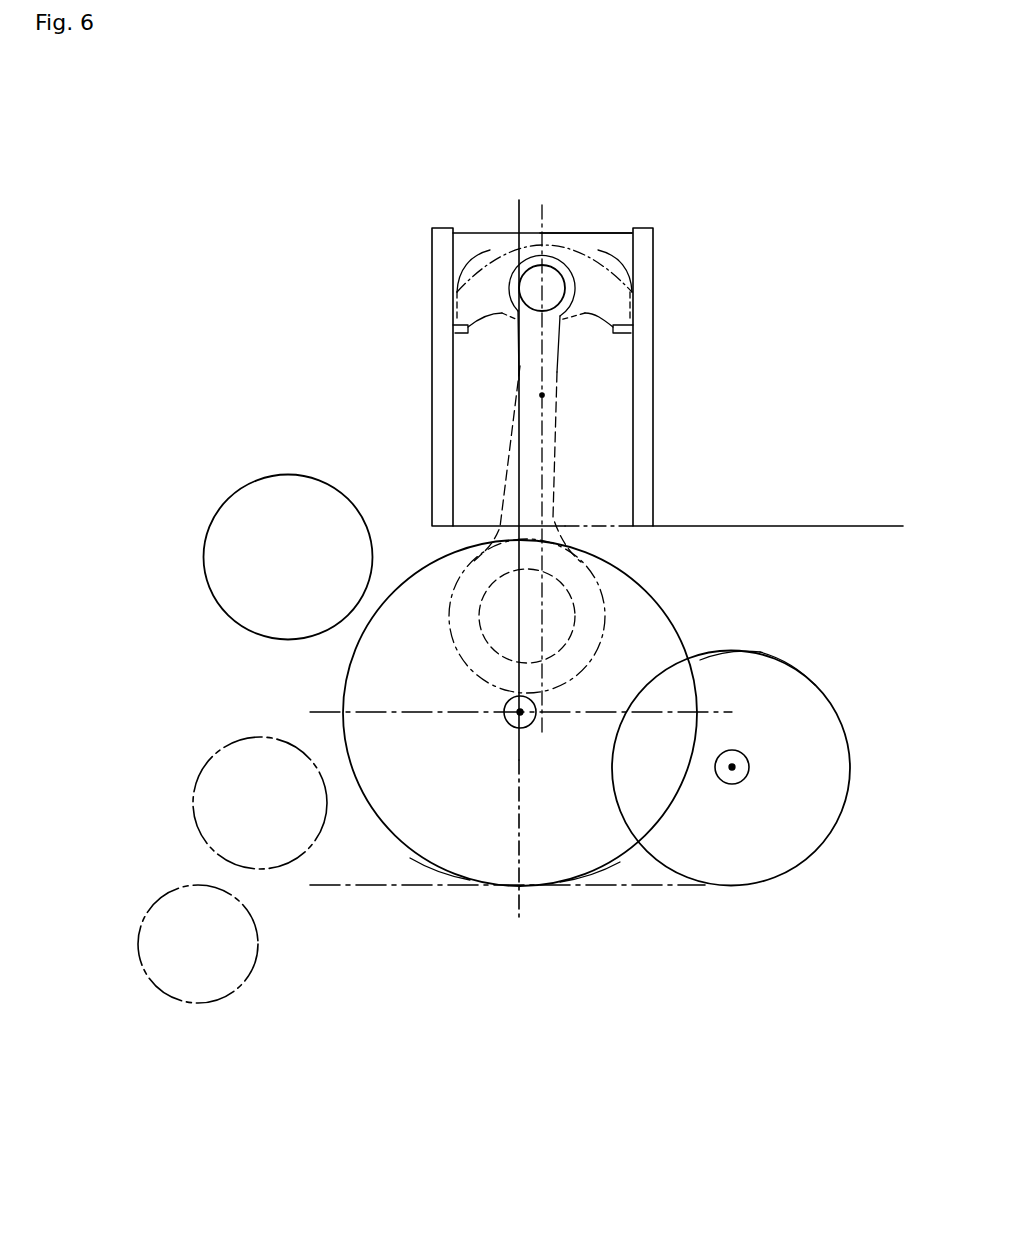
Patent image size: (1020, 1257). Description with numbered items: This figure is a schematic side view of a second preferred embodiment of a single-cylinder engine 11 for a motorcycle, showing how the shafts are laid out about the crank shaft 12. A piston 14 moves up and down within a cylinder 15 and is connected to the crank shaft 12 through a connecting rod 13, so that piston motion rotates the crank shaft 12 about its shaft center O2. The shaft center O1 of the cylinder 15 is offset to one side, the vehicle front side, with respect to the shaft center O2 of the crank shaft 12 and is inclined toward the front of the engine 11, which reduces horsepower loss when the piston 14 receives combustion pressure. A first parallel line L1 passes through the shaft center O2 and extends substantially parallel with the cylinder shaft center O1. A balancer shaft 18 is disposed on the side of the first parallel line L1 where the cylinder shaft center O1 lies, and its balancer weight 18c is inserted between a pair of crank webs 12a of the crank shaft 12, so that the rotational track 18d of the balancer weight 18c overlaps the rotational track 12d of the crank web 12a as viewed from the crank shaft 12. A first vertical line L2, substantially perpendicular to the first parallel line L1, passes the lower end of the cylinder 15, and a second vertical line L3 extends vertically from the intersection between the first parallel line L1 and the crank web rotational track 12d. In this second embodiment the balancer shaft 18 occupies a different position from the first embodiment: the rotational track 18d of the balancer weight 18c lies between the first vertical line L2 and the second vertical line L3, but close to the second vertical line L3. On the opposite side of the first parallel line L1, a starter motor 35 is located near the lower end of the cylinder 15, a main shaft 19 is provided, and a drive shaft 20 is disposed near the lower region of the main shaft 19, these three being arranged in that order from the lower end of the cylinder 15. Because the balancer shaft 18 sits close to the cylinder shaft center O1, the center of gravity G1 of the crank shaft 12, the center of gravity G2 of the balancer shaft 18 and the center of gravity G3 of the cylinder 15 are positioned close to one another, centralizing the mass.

The engine 11 is at (675, 268).
The crank shaft 12 is at (537, 728).
The crank web 12a is at (582, 877).
The rotational track of crank web 12d is at (460, 870).
The connecting rod 13 is at (555, 423).
The piston 14 is at (600, 234).
The cylinder 15 is at (654, 322).
The balancer shaft 18 is at (750, 760).
The balancer weight 18c is at (783, 656).
The rotational track of balancer weight 18d is at (737, 650).
The main shaft 19 is at (193, 805).
The drive shaft 20 is at (201, 1003).
The starter motor 35 is at (236, 478).
The center of gravity of crank shaft G1 is at (504, 707).
The center of gravity of balancer shaft G2 is at (733, 784).
The center of gravity of cylinder G3 is at (542, 395).
The shaft center of cylinder O1 is at (543, 478).
The shaft center of crank shaft O2 is at (517, 722).
The first parallel line L1 is at (516, 492).
The first vertical line L2 is at (830, 526).
The second vertical line L3 is at (683, 888).